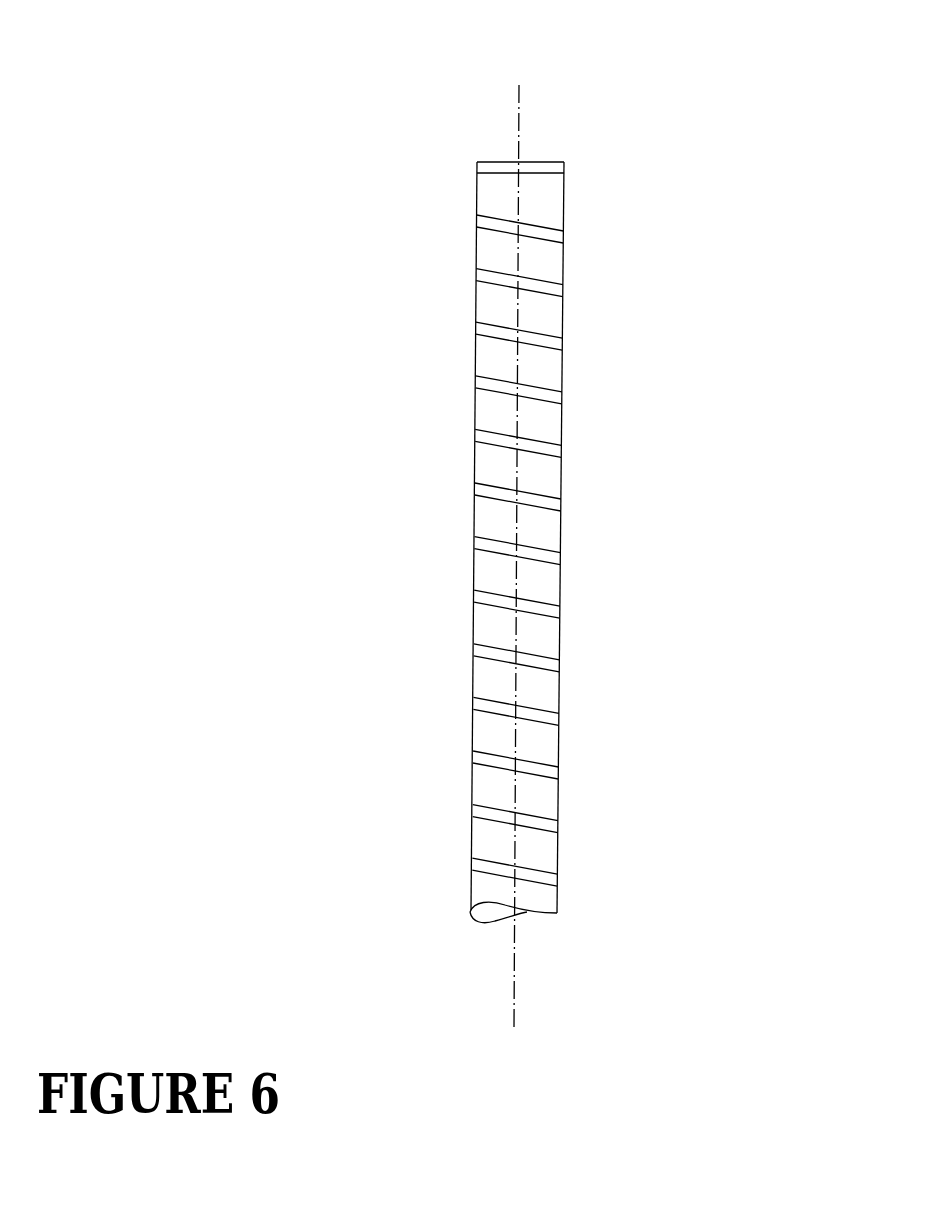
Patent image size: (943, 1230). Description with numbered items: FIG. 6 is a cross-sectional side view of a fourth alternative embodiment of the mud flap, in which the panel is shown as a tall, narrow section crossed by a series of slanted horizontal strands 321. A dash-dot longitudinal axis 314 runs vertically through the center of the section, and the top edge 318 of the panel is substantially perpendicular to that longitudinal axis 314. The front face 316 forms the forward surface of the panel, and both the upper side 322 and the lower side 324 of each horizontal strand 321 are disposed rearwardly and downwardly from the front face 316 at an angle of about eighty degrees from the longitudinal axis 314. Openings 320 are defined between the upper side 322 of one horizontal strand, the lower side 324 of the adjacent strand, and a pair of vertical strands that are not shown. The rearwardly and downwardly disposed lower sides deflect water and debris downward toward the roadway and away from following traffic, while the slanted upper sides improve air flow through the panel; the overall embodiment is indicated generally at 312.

The reinforced tubular assembly 312 is at (620, 345).
The longitudinal axis 314 is at (522, 115).
The front face 316 is at (473, 679).
The top edge 318 is at (479, 161).
The openings 320 is at (492, 360).
The horizontal strands 321 is at (483, 482).
The upper side 322 is at (538, 601).
The lower side 324 is at (530, 617).